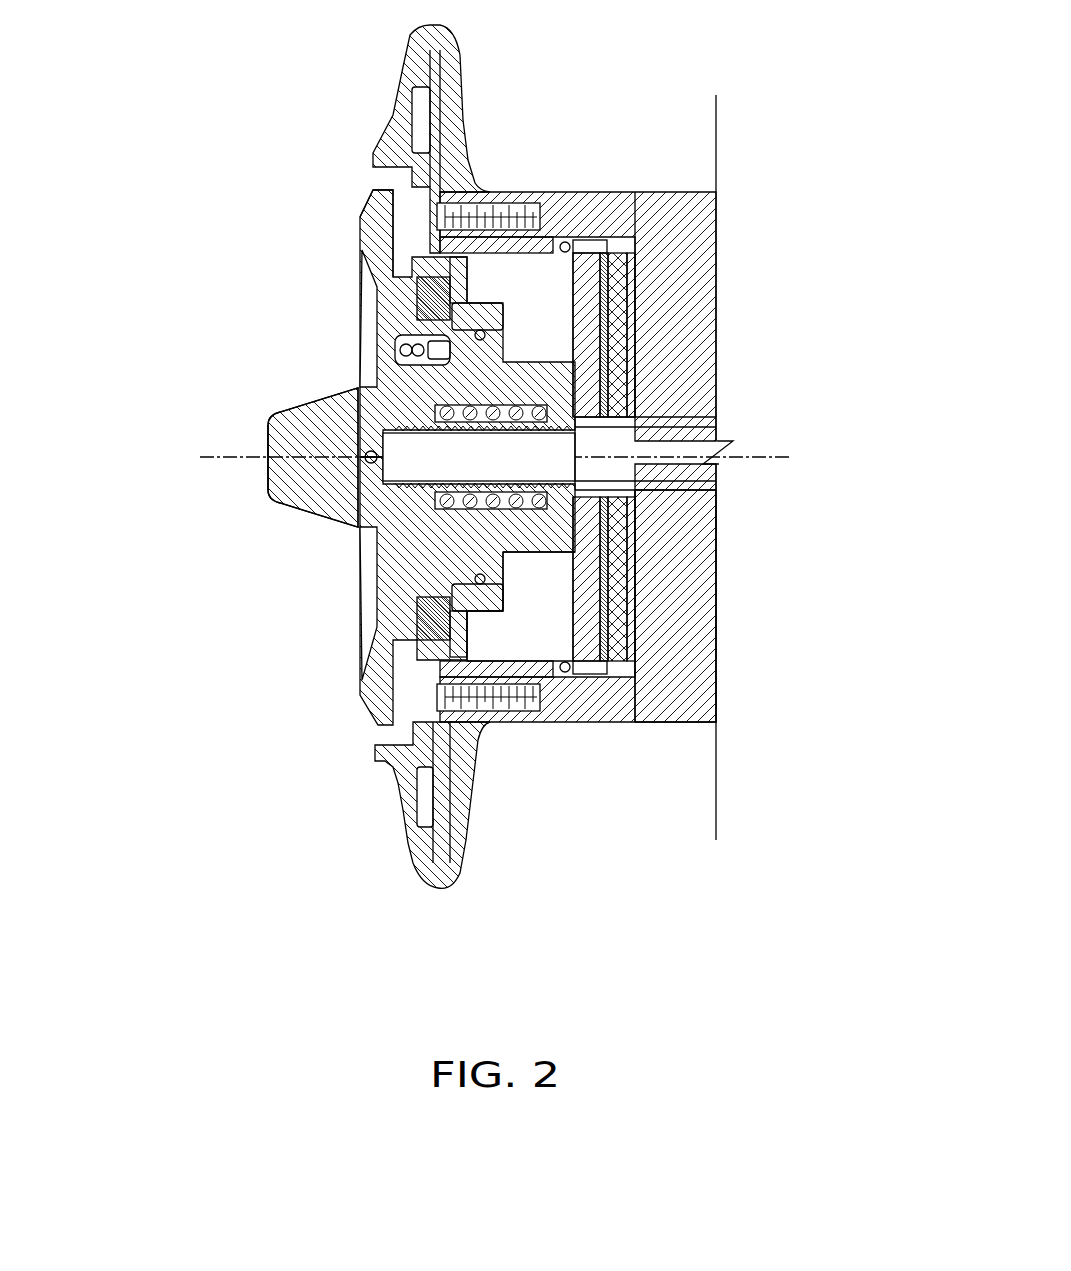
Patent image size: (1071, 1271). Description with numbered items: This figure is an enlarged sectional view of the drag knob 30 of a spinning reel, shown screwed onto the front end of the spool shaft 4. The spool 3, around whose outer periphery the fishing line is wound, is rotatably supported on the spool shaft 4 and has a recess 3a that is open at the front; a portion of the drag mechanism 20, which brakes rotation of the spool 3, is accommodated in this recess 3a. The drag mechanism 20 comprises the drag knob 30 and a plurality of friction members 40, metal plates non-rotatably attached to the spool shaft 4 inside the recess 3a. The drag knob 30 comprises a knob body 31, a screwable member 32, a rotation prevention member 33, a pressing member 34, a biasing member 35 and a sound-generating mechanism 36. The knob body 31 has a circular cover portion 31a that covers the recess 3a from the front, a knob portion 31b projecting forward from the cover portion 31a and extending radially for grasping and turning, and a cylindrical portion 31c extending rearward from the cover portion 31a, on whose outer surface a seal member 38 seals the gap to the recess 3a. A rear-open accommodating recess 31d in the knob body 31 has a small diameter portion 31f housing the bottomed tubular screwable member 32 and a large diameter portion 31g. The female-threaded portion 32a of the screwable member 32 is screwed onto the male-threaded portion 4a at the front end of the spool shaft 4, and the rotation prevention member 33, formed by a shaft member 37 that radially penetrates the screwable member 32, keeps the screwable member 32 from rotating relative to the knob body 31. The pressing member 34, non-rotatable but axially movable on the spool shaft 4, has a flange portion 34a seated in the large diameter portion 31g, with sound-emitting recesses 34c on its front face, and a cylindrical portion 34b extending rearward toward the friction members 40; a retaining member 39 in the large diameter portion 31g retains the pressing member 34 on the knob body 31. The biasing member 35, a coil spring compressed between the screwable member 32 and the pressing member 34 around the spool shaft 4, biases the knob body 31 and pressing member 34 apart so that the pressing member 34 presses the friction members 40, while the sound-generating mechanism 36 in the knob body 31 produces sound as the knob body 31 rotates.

The spool 3 is at (629, 722).
The recess 3a is at (612, 280).
The spool shaft 4 is at (683, 494).
The male-threaded portion 4a is at (592, 582).
The drag mechanism 20 is at (568, 618).
The drag knob 30 is at (260, 272).
The knob body 31 is at (353, 386).
The cover portion 31a is at (370, 217).
The knob portion 31b is at (275, 440).
The cylindrical portion 31c is at (448, 175).
The accommodating recess 31d is at (606, 360).
The small diameter portion 31f is at (375, 478).
The large diameter portion 31g is at (390, 643).
The screwable member 32 is at (357, 388).
The female-threaded portion 32a is at (440, 482).
The rotation prevention member 33 is at (318, 399).
The shaft member 37 is at (313, 457).
The pressing member 34 is at (531, 560).
The flange portion 34a is at (637, 300).
The cylindrical portion 34b is at (580, 490).
The sound-emitting recesses 34c is at (405, 285).
The biasing member 35 is at (619, 410).
The sound-generating mechanism 36 is at (408, 300).
The seal member 38 is at (590, 242).
The retaining member 39 is at (566, 244).
The friction members 40 is at (677, 193).